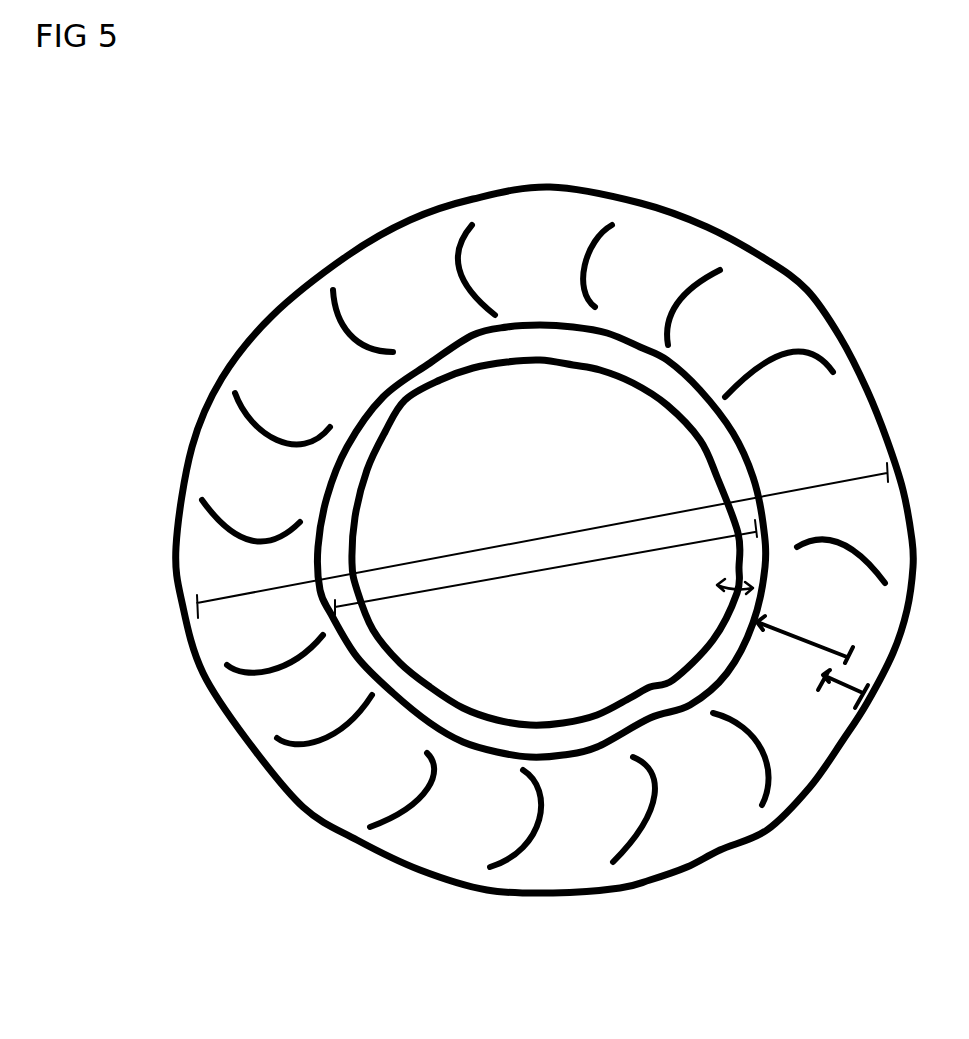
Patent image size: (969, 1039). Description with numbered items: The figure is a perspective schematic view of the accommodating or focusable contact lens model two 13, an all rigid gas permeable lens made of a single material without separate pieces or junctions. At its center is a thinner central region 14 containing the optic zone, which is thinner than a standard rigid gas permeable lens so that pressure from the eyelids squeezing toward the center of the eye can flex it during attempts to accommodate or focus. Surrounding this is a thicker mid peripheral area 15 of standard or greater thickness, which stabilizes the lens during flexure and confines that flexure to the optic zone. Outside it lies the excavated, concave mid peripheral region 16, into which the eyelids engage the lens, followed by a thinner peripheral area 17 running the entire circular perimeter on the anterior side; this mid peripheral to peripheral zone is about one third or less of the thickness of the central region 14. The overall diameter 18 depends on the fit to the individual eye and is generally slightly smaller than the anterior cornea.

The accommodating or focusable contact lens model two 13 is at (740, 143).
The central region 14 is at (546, 567).
The thicker mid peripheral area 15 is at (737, 596).
The excavated, concave mid peripheral region 16 is at (841, 697).
The thinner peripheral area 17 is at (805, 634).
The diameter 18 is at (542, 540).